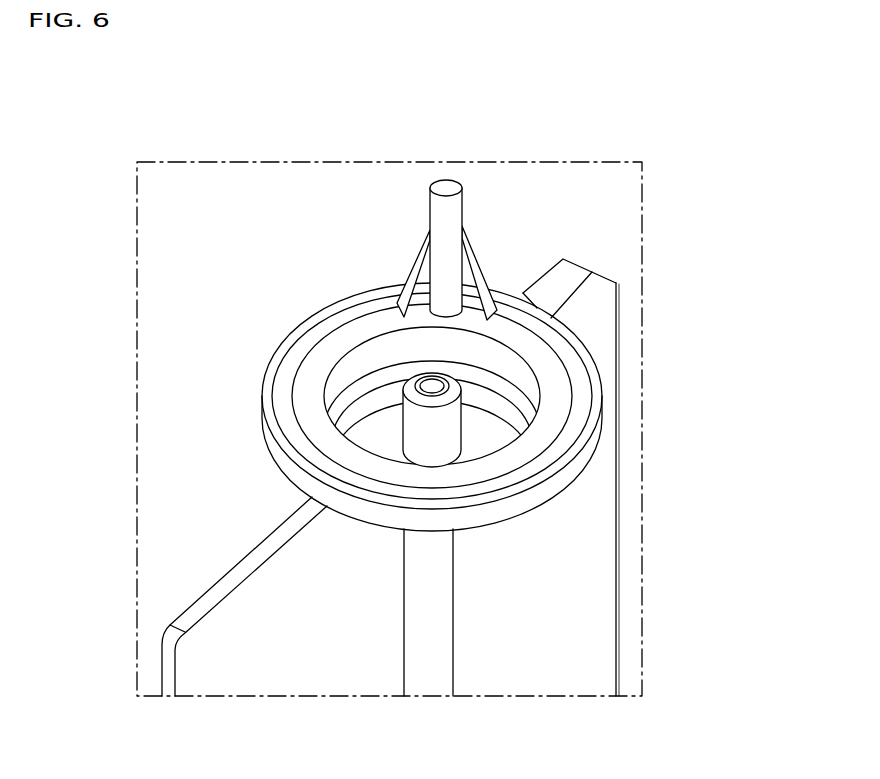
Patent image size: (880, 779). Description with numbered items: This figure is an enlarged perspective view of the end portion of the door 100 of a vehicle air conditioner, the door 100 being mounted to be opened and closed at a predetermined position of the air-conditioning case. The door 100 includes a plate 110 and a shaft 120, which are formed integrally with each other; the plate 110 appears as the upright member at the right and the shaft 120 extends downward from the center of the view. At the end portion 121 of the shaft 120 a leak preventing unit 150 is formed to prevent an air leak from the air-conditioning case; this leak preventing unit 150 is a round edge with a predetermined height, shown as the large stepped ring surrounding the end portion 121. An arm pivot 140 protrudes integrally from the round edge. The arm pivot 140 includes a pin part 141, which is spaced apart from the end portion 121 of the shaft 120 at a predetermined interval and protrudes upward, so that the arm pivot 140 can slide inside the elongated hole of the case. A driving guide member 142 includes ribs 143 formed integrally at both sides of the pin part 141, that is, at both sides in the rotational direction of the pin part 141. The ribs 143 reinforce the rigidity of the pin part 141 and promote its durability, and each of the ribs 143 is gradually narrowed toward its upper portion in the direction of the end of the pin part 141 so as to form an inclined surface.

The door 100 is at (251, 230).
The plate 110 is at (598, 325).
The shaft 120 is at (430, 637).
The end portion 121 is at (417, 398).
The arm pivot 140 is at (545, 200).
The pin part 141 is at (450, 210).
The driving guide member 142 is at (413, 257).
The ribs 143 is at (473, 268).
The leak preventing unit 150 is at (290, 340).